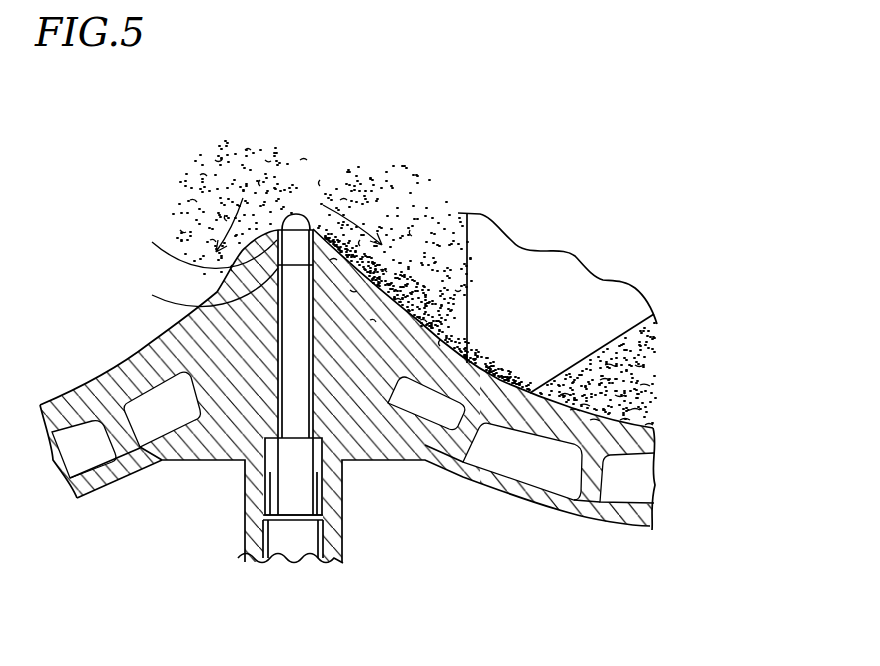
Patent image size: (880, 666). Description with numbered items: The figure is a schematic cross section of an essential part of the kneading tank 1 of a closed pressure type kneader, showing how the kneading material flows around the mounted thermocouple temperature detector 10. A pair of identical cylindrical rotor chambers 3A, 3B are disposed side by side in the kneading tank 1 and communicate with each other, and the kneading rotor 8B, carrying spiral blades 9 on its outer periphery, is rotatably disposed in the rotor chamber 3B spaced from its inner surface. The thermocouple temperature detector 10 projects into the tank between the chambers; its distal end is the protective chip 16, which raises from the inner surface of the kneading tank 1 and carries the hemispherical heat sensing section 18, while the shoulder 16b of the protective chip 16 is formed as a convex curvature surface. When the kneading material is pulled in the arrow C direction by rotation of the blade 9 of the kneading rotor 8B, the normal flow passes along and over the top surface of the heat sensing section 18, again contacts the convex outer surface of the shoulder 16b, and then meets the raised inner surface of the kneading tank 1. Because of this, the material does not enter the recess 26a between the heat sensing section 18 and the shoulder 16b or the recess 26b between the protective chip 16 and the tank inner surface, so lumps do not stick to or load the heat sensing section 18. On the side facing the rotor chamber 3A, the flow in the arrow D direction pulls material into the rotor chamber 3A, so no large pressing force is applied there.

The kneading tank 1 is at (405, 485).
The thermocouple temperature detector 10 is at (268, 573).
The protective chip 16 is at (198, 289).
The shoulder 16b is at (194, 241).
The heat sensing section 18 is at (300, 213).
The recess 26a is at (289, 204).
The recess 26b is at (248, 215).
The spiral blades 9 is at (600, 323).
The kneading rotor 8B is at (700, 291).
The rotor chamber 3A is at (93, 270).
The rotor chamber 3B is at (488, 189).
The arrow C direction C is at (333, 224).
The arrow D direction D is at (228, 222).